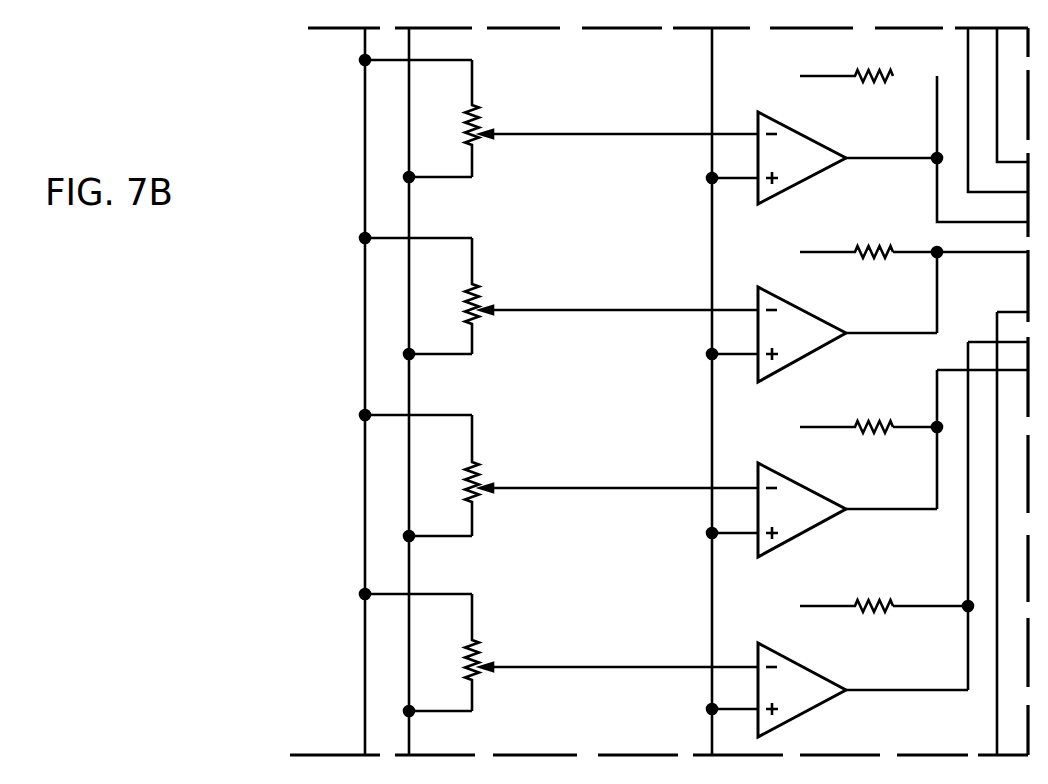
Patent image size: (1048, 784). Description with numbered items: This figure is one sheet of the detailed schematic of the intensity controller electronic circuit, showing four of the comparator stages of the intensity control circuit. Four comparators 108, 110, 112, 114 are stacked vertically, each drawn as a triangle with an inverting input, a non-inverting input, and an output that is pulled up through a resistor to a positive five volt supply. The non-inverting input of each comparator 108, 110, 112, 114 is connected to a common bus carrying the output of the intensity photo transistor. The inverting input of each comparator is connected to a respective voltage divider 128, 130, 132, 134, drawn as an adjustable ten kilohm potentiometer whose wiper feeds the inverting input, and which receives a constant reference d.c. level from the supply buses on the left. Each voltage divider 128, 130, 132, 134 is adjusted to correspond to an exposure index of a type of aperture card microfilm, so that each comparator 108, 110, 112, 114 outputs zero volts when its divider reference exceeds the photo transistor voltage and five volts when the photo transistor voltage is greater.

The comparator 108 is at (808, 138).
The comparator 110 is at (808, 313).
The comparator 112 is at (808, 489).
The comparator 114 is at (808, 670).
The voltage divider 128 is at (484, 107).
The voltage divider 130 is at (484, 286).
The voltage divider 132 is at (484, 464).
The voltage divider 134 is at (484, 642).